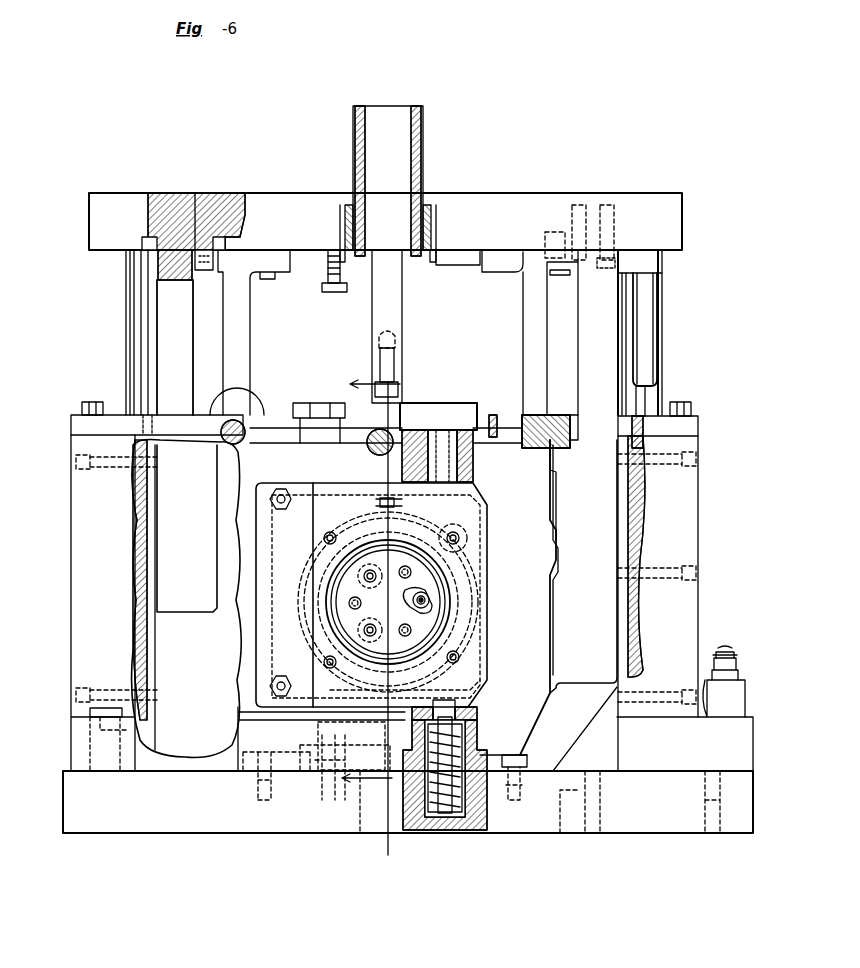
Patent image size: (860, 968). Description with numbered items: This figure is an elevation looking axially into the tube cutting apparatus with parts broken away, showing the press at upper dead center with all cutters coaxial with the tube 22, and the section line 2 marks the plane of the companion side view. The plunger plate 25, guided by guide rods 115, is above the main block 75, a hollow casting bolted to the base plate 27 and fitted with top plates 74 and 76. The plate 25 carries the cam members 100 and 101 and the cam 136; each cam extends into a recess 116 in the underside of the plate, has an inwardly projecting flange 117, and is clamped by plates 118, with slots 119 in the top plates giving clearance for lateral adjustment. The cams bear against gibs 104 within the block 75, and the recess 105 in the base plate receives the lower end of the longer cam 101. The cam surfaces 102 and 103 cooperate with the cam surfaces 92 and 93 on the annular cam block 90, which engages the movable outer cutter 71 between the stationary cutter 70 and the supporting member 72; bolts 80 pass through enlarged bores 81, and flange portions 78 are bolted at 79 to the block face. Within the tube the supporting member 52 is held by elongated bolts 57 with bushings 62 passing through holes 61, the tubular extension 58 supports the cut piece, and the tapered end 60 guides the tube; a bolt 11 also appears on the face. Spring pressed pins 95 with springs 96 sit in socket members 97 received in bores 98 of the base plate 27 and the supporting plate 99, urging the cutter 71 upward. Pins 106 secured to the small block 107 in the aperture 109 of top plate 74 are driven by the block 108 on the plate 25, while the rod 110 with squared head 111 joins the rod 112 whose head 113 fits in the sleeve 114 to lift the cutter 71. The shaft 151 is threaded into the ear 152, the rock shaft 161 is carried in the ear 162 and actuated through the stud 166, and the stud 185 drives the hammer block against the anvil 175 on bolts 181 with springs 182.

The section line 2 is at (378, 619).
The bolt 11 is at (272, 492).
The tube 22 is at (435, 595).
The plunger plate 25 is at (286, 195).
The base plate 27 is at (196, 826).
The supporting member 52 is at (425, 578).
The elongated bolt 57 is at (458, 660).
The tubular extension 58 is at (335, 585).
The tapered end 60 is at (338, 617).
The hole 61 is at (430, 600).
The bushing 62 is at (425, 605).
The stationary outer cutter 70 is at (462, 540).
The movable outer cutter 71 is at (480, 496).
The supporting member 72 is at (445, 680).
The top plate 74 is at (75, 418).
The main block 75 is at (75, 720).
The top plate 76 is at (632, 425).
The flange portion 78 is at (262, 720).
The bolt 79 is at (290, 698).
The bolt 80 is at (478, 480).
The enlarged bore 81 is at (460, 535).
The cam block 90 is at (545, 730).
The cam surface 92 is at (228, 452).
The cam surface 93 is at (556, 546).
The spring pressed pin 95 is at (470, 718).
The spring 96 is at (482, 830).
The socket member 97 is at (330, 805).
The receiving bore 98 is at (310, 810).
The supporting plate 99 is at (528, 762).
The cam member 100 is at (150, 500).
The cam member 101 is at (633, 500).
The cam surface 102 is at (216, 454).
The cam surface 103 is at (554, 482).
The gib 104 is at (140, 548).
The recess 105 is at (598, 836).
The pin 106 is at (310, 440).
The small block 107 is at (455, 403).
The block 108 is at (443, 267).
The receiving aperture 109 is at (498, 415).
The rod 110 is at (400, 412).
The squared head 111 is at (396, 499).
The rod 112 is at (402, 318).
The rod head 113 is at (395, 255).
The sleeve 114 is at (423, 150).
The guide rod 115 is at (128, 340).
The recess 116 is at (142, 250).
The flange 117 is at (200, 195).
The clamp plate 118 is at (213, 265).
The slot 119 is at (612, 425).
The cam 136 is at (250, 325).
The shaft 151 is at (365, 430).
The ear 152 is at (375, 430).
The rock shaft 161 is at (225, 428).
The ear 162 is at (228, 410).
The stud 166 is at (334, 292).
The anvil 175 is at (745, 692).
The bolt 181 is at (725, 658).
The spring 182 is at (736, 660).
The stud 185 is at (658, 318).